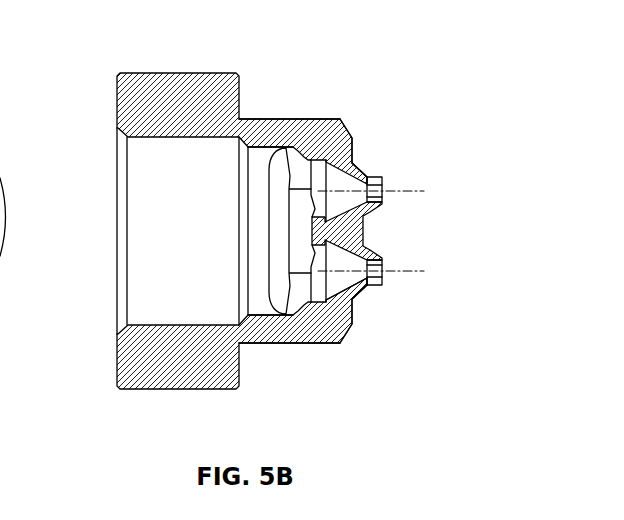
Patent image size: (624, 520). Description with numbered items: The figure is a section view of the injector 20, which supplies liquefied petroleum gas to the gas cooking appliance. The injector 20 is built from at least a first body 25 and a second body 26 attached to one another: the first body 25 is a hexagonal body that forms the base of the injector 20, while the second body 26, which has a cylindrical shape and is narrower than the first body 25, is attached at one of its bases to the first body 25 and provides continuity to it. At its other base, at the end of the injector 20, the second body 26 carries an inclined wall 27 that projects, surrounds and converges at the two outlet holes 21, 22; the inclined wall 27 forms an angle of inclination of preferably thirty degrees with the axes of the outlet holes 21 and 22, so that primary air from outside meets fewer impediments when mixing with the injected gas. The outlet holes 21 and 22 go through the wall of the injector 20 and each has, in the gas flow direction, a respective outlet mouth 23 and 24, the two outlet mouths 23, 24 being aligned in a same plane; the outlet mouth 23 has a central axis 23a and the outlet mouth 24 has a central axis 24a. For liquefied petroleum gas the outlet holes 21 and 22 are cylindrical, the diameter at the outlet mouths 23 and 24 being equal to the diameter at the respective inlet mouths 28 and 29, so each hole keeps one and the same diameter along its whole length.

The injector 20 is at (83, 125).
The outlet hole 21 is at (373, 177).
The outlet hole 22 is at (375, 286).
The outlet mouth 23 is at (382, 182).
The central axis 23a is at (402, 193).
The outlet mouth 24 is at (382, 281).
The central axis 24a is at (403, 273).
The first body 25 is at (132, 97).
The second body 26 is at (257, 133).
The inclined wall 27 is at (366, 168).
The inlet mouth 28 is at (350, 137).
The inlet mouth 29 is at (362, 283).